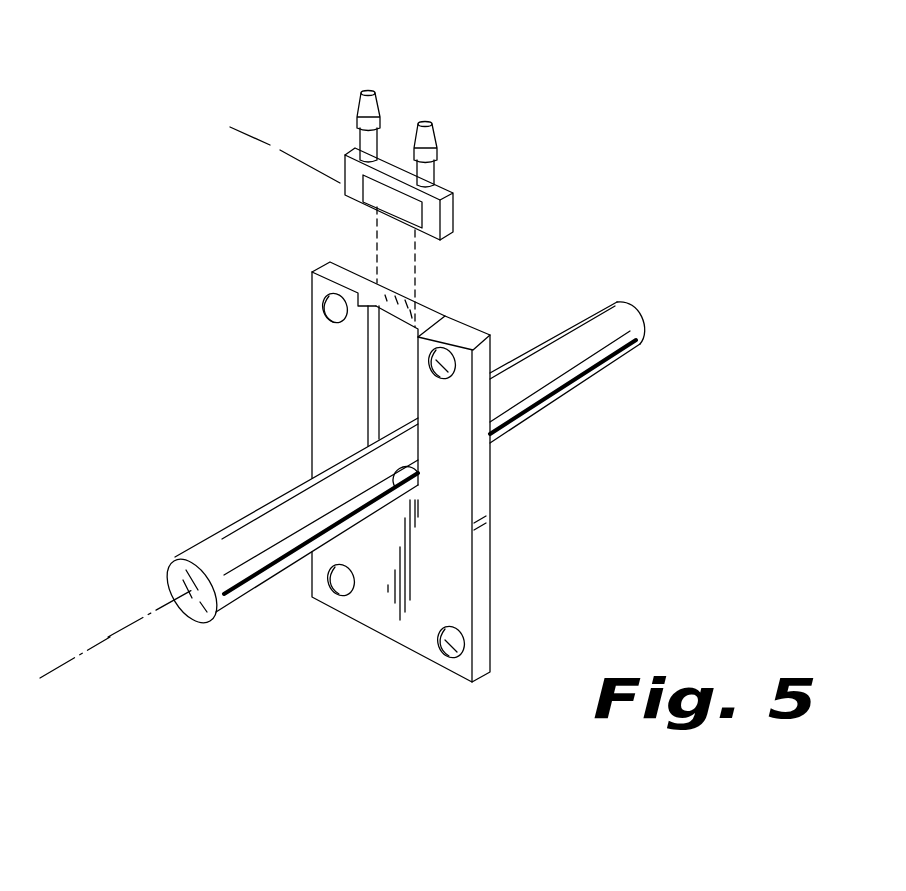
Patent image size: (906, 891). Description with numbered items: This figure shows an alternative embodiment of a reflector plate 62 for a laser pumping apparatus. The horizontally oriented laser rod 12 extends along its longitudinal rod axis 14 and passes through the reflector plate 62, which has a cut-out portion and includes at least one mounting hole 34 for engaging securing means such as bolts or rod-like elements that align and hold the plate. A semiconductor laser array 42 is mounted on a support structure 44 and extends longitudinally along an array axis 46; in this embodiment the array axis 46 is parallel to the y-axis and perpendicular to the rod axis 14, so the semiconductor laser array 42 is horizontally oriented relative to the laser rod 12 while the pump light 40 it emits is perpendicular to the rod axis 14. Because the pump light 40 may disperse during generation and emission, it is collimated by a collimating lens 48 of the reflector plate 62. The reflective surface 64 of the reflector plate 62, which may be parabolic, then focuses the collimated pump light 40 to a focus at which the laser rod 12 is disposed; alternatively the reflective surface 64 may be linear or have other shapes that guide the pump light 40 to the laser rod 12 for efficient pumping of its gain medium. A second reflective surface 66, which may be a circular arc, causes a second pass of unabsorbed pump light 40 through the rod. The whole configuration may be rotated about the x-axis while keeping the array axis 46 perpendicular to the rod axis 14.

The laser rod 12 is at (222, 548).
The rod axis 14 is at (130, 617).
The mounting hole 34 is at (445, 652).
The pump light 40 is at (390, 177).
The semiconductor laser array 42 is at (469, 180).
The support structure 44 is at (408, 127).
The array axis 46 is at (240, 127).
The collimating lens 48 is at (430, 308).
The reflector plate 62 is at (415, 492).
The reflective surface 64 is at (379, 373).
The second reflective surface 66 is at (408, 465).